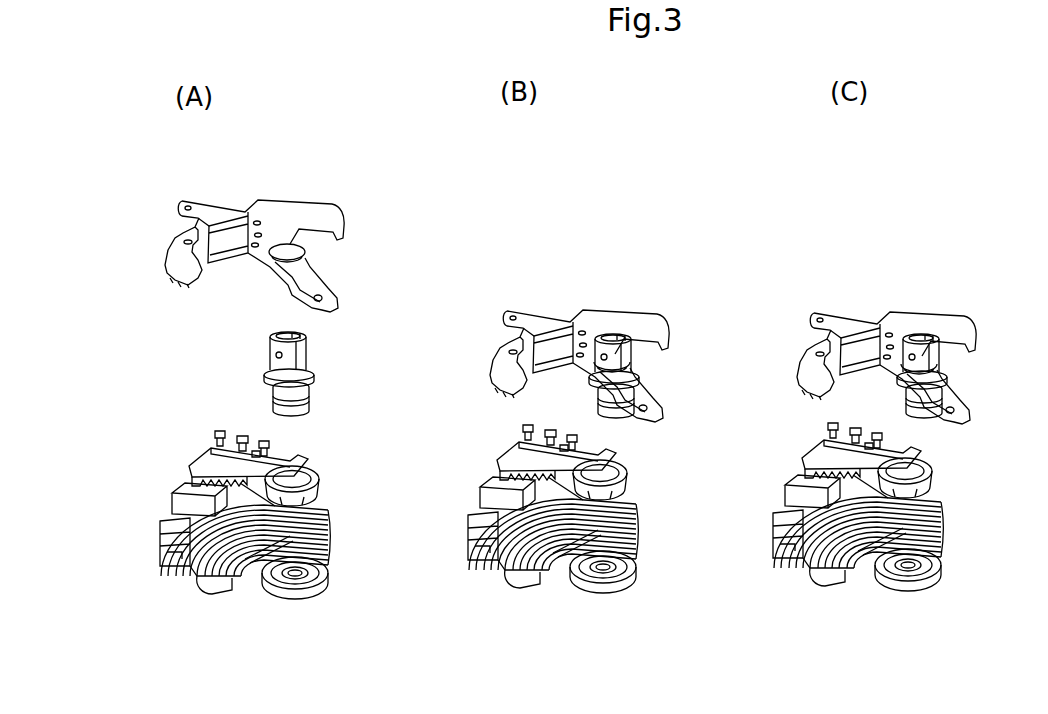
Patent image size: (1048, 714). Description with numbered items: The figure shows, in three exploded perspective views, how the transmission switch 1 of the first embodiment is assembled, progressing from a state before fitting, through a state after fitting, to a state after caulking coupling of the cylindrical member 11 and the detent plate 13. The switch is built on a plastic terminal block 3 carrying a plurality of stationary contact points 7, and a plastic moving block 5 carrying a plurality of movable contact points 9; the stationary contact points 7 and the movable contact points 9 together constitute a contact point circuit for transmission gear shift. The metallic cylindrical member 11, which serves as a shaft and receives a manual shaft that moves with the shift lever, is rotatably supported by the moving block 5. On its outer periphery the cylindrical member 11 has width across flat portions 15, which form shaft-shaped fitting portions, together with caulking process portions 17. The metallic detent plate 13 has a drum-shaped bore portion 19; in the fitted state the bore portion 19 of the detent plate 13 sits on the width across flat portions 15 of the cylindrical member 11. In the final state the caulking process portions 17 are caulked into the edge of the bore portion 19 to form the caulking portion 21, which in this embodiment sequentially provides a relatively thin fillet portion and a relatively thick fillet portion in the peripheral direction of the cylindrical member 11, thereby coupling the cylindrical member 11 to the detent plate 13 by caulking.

In FIG. 3A, the transmission switch 1 is at (330, 155).
In FIG. 3B, the transmission switch 1 is at (615, 177).
In FIG. 3C, the transmission switch 1 is at (923, 193).
In FIG. 3A, the terminal block 3 is at (254, 594).
In FIG. 3B, the terminal block 3 is at (583, 588).
In FIG. 3C, the terminal block 3 is at (880, 588).
In FIG. 3A, the moving block 5 is at (288, 454).
In FIG. 3B, the moving block 5 is at (594, 441).
In FIG. 3C, the moving block 5 is at (817, 447).
In FIG. 3A, the stationary contact points 7 is at (217, 588).
In FIG. 3B, the stationary contact points 7 is at (517, 578).
In FIG. 3C, the stationary contact points 7 is at (817, 578).
In FIG. 3A, the movable contact points 9 is at (310, 516).
In FIG. 3B, the movable contact points 9 is at (617, 504).
In FIG. 3C, the movable contact points 9 is at (920, 505).
In FIG. 3A, the cylindrical member 11 is at (313, 400).
In FIG. 3B, the cylindrical member 11 is at (607, 404).
In FIG. 3C, the cylindrical member 11 is at (917, 418).
In FIG. 3A, the detent plate 13 is at (254, 229).
In FIG. 3B, the detent plate 13 is at (595, 331).
In FIG. 3C, the detent plate 13 is at (922, 333).
In FIG. 3A, the width across flat portions 15 is at (275, 372).
In FIG. 3B, the width across flat portions 15 is at (592, 373).
In FIG. 3C, the width across flat portions 15 is at (883, 371).
In FIG. 3A, the caulking process portions 17 is at (316, 373).
In FIG. 3B, the caulking process portions 17 is at (633, 363).
In FIG. 3C, the caulking process portions 17 is at (921, 353).
In FIG. 3A, the bore portion 19 is at (268, 262).
In FIG. 3B, the bore portion 19 is at (657, 330).
In FIG. 3C, the bore portion 19 is at (970, 340).
In FIG. 3C, the caulking portion 21 is at (957, 390).